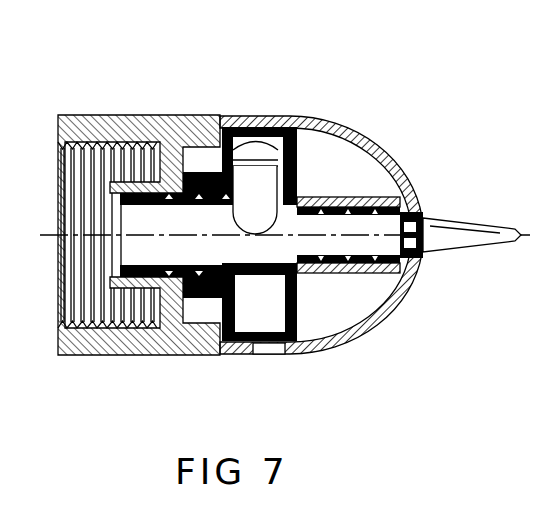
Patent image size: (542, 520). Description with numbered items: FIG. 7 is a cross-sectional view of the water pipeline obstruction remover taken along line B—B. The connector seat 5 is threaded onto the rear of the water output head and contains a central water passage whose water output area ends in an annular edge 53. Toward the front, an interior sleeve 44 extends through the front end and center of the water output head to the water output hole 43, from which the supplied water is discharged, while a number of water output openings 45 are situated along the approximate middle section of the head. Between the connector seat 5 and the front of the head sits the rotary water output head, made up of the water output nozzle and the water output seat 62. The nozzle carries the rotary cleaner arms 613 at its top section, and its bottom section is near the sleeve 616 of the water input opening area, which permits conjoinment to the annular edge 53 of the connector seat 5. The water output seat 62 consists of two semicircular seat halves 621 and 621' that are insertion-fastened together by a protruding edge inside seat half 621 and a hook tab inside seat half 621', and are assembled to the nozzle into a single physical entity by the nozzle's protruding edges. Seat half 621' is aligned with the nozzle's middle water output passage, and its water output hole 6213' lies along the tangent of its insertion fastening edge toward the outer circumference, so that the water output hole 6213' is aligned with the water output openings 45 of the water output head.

The connector seat 5 is at (118, 358).
The annular edge 53 is at (140, 112).
The water output seat 62 is at (381, 232).
The semicircular seat half 621 is at (321, 328).
The semicircular seat half 621' is at (321, 138).
The water output hole 6213' is at (228, 126).
The sleeve 616 is at (198, 172).
The rotary cleaner arms 613 is at (467, 220).
The water output hole 43 is at (424, 241).
The interior sleeve 44 is at (358, 264).
The water output openings 45 is at (268, 345).